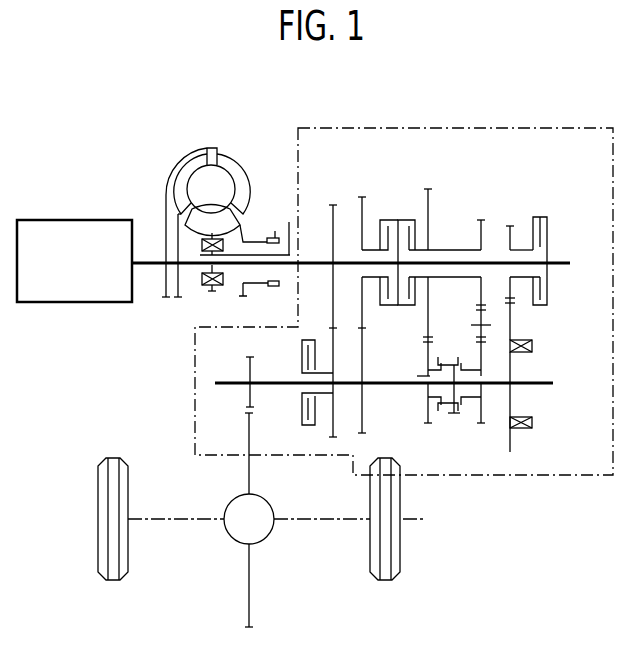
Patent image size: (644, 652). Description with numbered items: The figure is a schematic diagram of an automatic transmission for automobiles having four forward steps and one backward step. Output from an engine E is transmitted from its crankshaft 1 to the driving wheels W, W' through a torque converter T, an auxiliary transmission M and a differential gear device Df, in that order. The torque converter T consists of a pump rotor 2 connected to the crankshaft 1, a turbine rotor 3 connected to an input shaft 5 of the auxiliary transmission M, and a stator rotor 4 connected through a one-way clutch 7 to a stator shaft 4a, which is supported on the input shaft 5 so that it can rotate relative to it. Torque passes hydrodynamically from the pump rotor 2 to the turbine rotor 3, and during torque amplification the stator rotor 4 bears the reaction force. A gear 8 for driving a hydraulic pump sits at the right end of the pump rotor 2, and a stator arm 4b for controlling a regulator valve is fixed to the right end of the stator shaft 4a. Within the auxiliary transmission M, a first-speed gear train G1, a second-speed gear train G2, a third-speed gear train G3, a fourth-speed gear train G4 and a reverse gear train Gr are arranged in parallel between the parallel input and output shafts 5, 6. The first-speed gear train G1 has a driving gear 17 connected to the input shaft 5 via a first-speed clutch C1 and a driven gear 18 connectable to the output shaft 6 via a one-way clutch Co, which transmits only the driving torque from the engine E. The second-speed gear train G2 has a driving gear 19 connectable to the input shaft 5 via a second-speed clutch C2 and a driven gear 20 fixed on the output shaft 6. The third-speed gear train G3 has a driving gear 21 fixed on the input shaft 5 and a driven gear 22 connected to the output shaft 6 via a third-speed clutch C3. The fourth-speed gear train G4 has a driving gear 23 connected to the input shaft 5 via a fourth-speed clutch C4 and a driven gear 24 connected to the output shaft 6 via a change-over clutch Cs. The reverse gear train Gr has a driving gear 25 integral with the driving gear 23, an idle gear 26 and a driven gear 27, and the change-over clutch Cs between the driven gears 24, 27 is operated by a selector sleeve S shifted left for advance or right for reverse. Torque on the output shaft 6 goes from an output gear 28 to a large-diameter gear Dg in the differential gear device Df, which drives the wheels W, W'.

The engine E is at (77, 288).
The torque converter T is at (217, 202).
The auxiliary transmission M is at (457, 126).
The crankshaft 1 is at (149, 265).
The pump rotor 2 is at (245, 191).
The turbine rotor 3 is at (189, 164).
The stator rotor 4 is at (234, 224).
The stator shaft 4a is at (279, 258).
The stator arm 4b is at (289, 222).
The input shaft 5 is at (235, 266).
The output shaft 6 is at (232, 386).
The one-way clutch 7 is at (200, 246).
The gear 8 is at (259, 254).
The driving gear 17 is at (510, 242).
The driven gear 18 is at (518, 314).
The driving gear 19 is at (361, 231).
The driven gear 20 is at (362, 345).
The driving gear 21 is at (332, 229).
The driven gear 22 is at (332, 423).
The driving gear 23 is at (429, 198).
The driven gear 24 is at (427, 352).
The driving gear 25 is at (481, 244).
The idle gear 26 is at (480, 307).
The driven gear 27 is at (481, 360).
The output gear 28 is at (249, 366).
The first-speed gear train G1 is at (510, 226).
The second-speed gear train G2 is at (361, 195).
The third-speed gear train G3 is at (333, 203).
The fourth-speed gear train G4 is at (428, 188).
The reverse gear train Gr is at (482, 218).
The first-speed clutch C1 is at (540, 217).
The second-speed clutch C2 is at (384, 220).
The third-speed clutch C3 is at (301, 354).
The fourth-speed clutch C4 is at (410, 220).
The one-way clutch Co is at (532, 437).
The change-over clutch Cs is at (426, 429).
The selector sleeve S is at (456, 401).
The large-diameter gear Dg is at (250, 473).
The differential gear device Df is at (265, 531).
The driving wheel W is at (121, 538).
The driving wheel W' is at (386, 539).